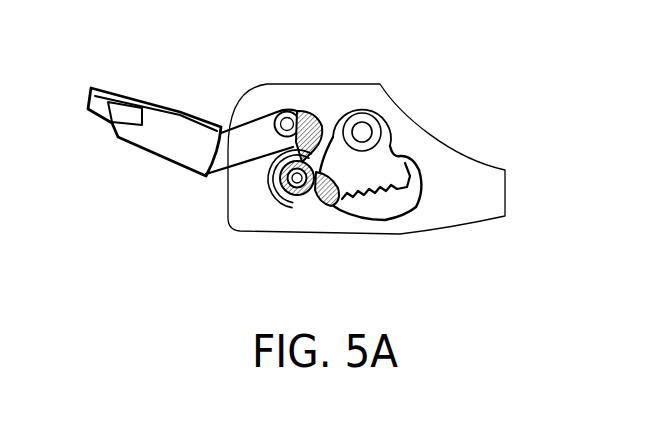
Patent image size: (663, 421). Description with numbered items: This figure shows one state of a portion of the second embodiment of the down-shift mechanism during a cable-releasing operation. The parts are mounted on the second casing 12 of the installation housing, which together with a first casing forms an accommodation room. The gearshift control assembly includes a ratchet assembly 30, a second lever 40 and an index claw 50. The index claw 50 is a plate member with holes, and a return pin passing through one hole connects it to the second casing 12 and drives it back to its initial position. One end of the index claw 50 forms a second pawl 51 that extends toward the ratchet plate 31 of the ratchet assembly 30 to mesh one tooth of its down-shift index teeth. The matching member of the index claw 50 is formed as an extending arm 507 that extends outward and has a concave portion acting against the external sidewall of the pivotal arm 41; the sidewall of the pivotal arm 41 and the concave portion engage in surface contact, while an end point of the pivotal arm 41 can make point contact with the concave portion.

The second casing 12 is at (337, 75).
The second lever 40 is at (108, 143).
The pivotal arm 41 is at (248, 133).
The extending arm 507 is at (313, 115).
The ratchet assembly 30 is at (368, 168).
The ratchet plate 31 is at (408, 192).
The index claw 50 is at (284, 198).
The second pawl 51 is at (337, 200).